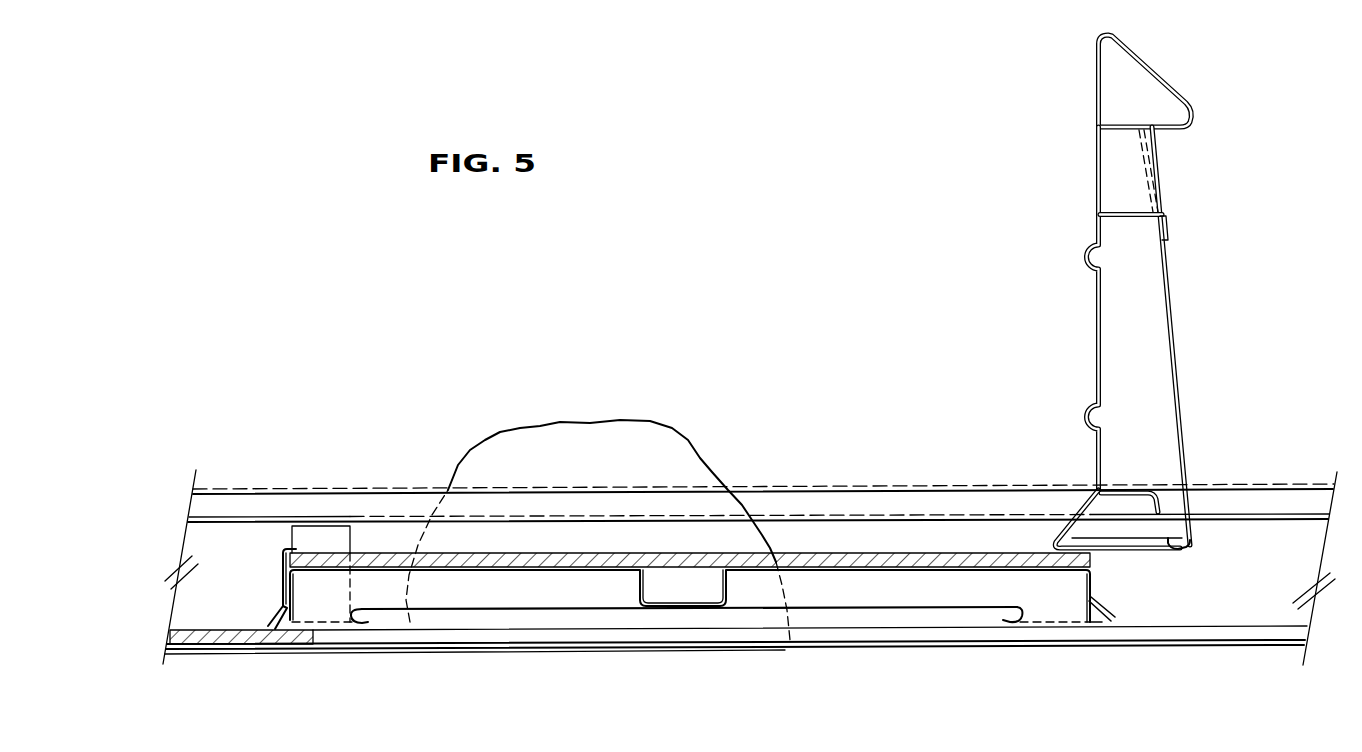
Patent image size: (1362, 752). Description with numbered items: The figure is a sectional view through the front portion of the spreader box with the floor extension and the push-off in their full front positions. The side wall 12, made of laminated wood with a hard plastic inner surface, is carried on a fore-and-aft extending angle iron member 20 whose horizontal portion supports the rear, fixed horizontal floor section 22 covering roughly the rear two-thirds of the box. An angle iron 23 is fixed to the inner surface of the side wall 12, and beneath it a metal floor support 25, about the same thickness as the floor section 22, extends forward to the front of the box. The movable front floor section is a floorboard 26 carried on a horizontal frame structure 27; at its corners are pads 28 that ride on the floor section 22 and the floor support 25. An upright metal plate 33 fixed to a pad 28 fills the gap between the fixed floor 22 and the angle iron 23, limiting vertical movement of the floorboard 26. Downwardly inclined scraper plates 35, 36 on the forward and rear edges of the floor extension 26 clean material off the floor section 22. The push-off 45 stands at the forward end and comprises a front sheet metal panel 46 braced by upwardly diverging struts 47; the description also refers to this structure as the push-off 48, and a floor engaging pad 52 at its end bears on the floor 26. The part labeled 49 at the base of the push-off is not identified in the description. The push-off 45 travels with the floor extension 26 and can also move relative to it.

The side wall 12 is at (563, 443).
The angle iron member 20 is at (970, 647).
The rear fixed horizontal floor section 22 is at (237, 637).
The angle iron 23 is at (1292, 522).
The metal floor support 25 is at (478, 635).
The floorboard 26 is at (637, 552).
The horizontal frame structure 27 is at (817, 600).
The pad 28 is at (363, 625).
The upright metal plate 33 is at (310, 538).
The scraper plate 35 is at (1103, 611).
The scraper plate 36 is at (282, 608).
The push-off 45 is at (1136, 310).
The front sheet metal panel 46 is at (1097, 319).
The vertical brace 47 is at (1143, 415).
The push-off 48 is at (1139, 65).
The foot 49 is at (1080, 510).
The floor engaging pad 52 is at (1175, 553).